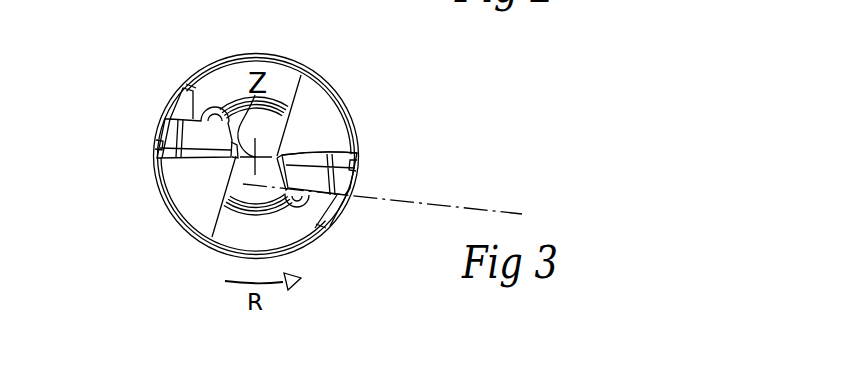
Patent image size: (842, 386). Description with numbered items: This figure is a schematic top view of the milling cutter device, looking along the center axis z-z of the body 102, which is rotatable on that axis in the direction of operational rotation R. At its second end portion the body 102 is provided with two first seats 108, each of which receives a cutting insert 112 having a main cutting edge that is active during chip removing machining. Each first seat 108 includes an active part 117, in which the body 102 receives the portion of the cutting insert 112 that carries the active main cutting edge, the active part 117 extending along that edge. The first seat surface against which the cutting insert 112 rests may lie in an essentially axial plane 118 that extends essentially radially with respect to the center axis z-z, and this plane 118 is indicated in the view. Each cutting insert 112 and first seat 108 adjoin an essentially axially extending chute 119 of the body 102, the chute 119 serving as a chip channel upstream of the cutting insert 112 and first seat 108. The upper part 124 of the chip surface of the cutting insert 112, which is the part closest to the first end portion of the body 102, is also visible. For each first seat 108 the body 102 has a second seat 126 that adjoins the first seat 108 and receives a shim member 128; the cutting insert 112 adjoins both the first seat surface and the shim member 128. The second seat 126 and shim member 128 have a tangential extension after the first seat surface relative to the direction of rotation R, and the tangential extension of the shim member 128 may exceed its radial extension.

The body 102 is at (293, 61).
The first seat 108 is at (154, 125).
The cutting insert 112 is at (156, 143).
The active part 117 is at (365, 184).
The axial plane 118 is at (512, 213).
The chute 119 is at (200, 182).
The upper part of the chip surface 124 is at (334, 152).
The second seat 126 is at (175, 90).
The shim member 128 is at (172, 104).